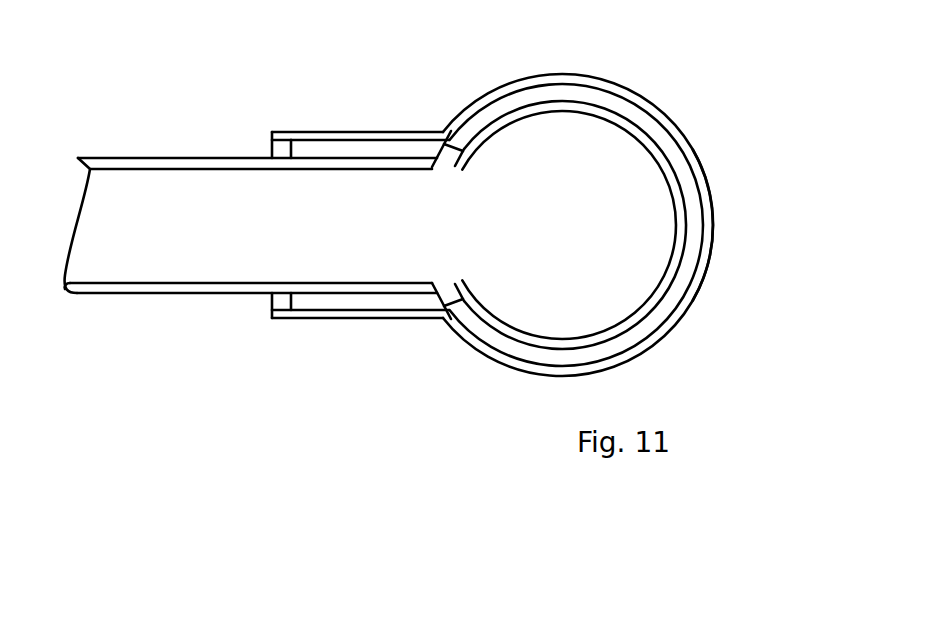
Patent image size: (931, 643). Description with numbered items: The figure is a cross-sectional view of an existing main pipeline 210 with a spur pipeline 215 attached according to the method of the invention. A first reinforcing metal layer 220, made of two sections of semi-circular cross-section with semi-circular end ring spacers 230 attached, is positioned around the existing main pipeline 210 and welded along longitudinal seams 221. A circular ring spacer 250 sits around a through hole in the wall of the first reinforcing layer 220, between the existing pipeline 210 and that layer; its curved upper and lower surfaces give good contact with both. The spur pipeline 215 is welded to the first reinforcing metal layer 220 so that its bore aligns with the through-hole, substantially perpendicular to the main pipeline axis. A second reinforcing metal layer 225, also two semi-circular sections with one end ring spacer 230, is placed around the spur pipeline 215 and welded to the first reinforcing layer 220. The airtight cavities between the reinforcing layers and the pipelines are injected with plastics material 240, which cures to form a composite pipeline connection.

The existing main pipeline 210 is at (667, 172).
The spur pipeline 215 is at (147, 293).
The first reinforcing metal layer 220 is at (670, 117).
The longitudinal seams 221 is at (711, 224).
The second reinforcing metal layer 225 is at (323, 131).
The end ring spacer 230 is at (280, 153).
The plastics material 240 is at (375, 146).
The circular ring spacer 250 is at (443, 297).